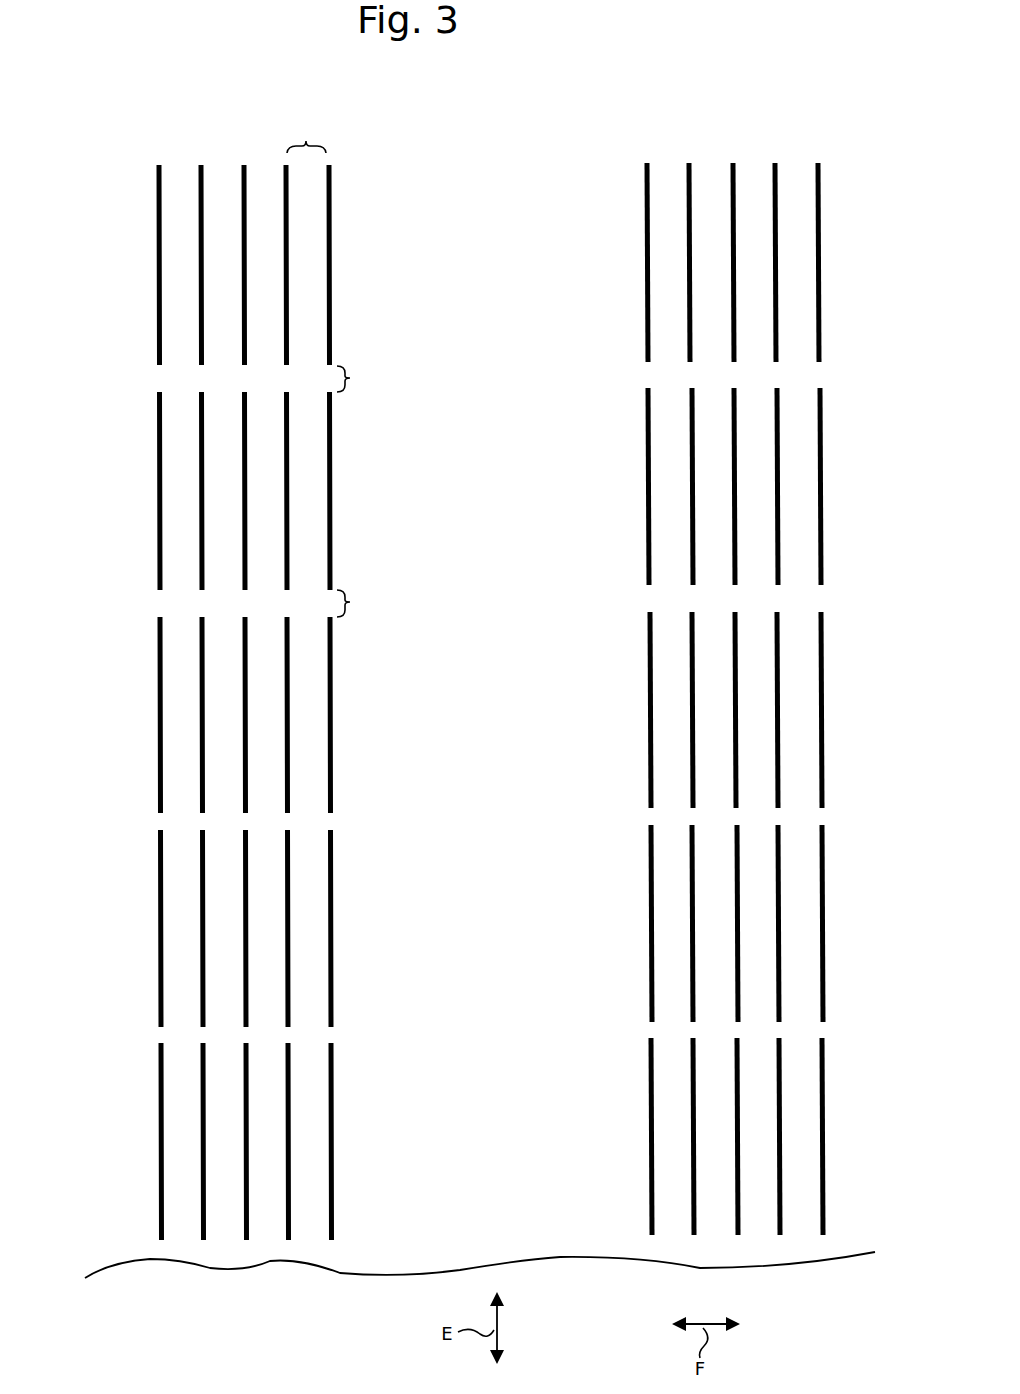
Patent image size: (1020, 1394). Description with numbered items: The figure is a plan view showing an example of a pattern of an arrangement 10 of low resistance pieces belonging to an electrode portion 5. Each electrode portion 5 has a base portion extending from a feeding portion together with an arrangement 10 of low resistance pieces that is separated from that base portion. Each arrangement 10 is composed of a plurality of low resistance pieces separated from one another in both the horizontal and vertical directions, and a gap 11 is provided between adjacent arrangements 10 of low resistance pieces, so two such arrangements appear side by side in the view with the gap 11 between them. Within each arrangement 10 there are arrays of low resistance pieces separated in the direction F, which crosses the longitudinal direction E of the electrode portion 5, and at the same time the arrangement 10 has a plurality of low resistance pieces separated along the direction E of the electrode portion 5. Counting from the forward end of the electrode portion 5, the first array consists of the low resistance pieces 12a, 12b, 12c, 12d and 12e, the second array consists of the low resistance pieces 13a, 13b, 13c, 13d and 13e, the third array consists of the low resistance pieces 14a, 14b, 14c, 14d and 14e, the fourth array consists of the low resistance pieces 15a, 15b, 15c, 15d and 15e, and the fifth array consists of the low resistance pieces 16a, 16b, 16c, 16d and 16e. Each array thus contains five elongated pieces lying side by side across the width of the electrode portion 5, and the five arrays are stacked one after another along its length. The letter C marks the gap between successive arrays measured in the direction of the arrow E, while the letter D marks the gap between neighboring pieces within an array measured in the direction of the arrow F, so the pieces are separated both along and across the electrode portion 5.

The electrode portion 5 is at (343, 173).
The arrangement of low resistance pieces 10 is at (104, 158).
The gap 11 is at (477, 657).
The low resistance piece 12a is at (644, 168).
The low resistance piece 12b is at (688, 168).
The low resistance piece 12c is at (734, 170).
The low resistance piece 12d is at (778, 182).
The low resistance piece 12e is at (820, 274).
The low resistance piece 13a is at (648, 475).
The low resistance piece 13b is at (692, 530).
The low resistance piece 13c is at (737, 478).
The low resistance piece 13d is at (778, 508).
The low resistance piece 13e is at (821, 547).
The low resistance piece 14a is at (650, 722).
The low resistance piece 14b is at (692, 660).
The low resistance piece 14c is at (737, 668).
The low resistance piece 14d is at (778, 698).
The low resistance piece 14e is at (822, 737).
The low resistance piece 15a is at (651, 908).
The low resistance piece 15b is at (692, 963).
The low resistance piece 15c is at (737, 892).
The low resistance piece 15d is at (779, 926).
The low resistance piece 15e is at (823, 964).
The low resistance piece 16a is at (651, 1090).
The low resistance piece 16b is at (693, 1143).
The low resistance piece 16c is at (737, 1073).
The low resistance piece 16d is at (780, 1106).
The low resistance piece 16e is at (823, 1144).